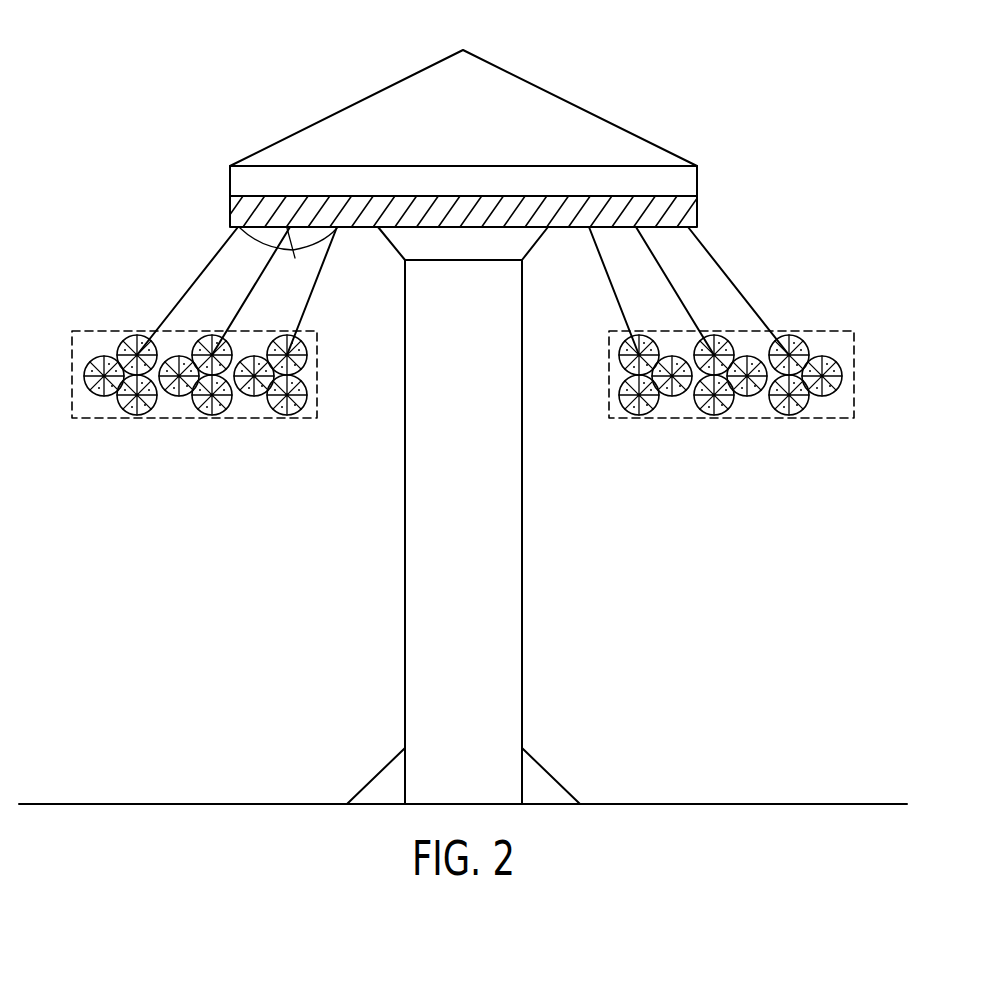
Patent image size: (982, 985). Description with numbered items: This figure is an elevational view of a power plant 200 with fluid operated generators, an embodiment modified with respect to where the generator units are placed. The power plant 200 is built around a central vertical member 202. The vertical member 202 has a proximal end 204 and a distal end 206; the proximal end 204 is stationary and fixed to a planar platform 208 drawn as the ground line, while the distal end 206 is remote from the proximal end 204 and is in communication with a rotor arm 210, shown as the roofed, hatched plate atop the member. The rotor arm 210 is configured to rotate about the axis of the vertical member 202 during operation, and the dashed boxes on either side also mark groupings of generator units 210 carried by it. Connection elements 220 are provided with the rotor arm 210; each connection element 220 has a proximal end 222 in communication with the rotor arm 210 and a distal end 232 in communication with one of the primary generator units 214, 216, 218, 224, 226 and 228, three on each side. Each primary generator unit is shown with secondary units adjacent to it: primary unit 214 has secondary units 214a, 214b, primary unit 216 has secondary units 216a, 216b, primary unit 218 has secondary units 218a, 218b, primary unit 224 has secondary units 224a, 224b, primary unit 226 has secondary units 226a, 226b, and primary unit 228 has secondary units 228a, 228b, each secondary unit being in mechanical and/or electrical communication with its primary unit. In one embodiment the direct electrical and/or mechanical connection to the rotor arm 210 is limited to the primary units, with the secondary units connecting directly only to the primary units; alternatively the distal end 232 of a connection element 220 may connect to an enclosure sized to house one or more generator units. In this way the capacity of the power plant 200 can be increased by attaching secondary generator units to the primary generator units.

The power plant 200 is at (164, 75).
The central vertical member 202 is at (405, 572).
The proximal end 204 is at (405, 770).
The distal end 206 is at (405, 268).
The planar platform 208 is at (260, 803).
The rotor arm 210 is at (358, 228).
The primary generator unit 214 is at (115, 397).
The first cluster sensor a 214a is at (116, 398).
The secondary unit 214b is at (137, 415).
The primary generator unit 216 is at (197, 377).
The second cluster sensor a 216a is at (180, 397).
The secondary unit 216b is at (212, 415).
The primary generator unit 218 is at (306, 397).
The third cluster sensor a 218a is at (254, 397).
The secondary unit 218b is at (307, 395).
The connection element 220 is at (307, 303).
The proximal end 222 is at (288, 258).
The primary generator unit 224 is at (620, 395).
The fourth cluster sensor a 224a is at (620, 397).
The secondary unit 224b is at (673, 395).
The primary generator unit 226 is at (730, 377).
The fifth cluster sensor a 226a is at (714, 415).
The secondary unit 226b is at (748, 395).
The primary generator unit 228 is at (811, 398).
The sixth cluster sensor a 228a is at (789, 415).
The secondary unit 228b is at (823, 395).
The distal end 232 is at (136, 337).